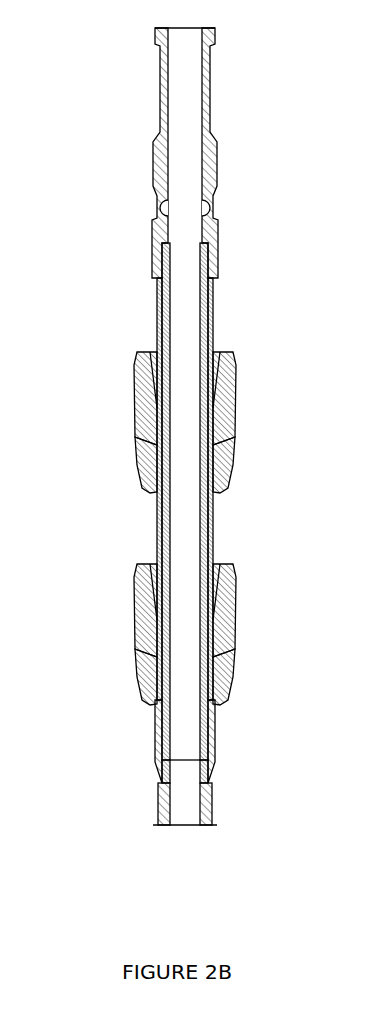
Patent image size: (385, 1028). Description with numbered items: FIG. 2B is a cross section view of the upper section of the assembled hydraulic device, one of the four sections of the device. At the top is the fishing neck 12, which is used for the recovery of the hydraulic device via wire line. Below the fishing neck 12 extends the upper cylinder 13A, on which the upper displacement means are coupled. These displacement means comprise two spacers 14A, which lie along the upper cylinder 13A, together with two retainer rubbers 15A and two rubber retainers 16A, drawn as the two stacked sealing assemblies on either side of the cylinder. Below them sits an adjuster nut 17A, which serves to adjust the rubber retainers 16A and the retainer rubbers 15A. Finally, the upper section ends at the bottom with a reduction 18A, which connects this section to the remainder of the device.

The fishing neck 12 is at (212, 39).
The upper cylinder 13A is at (203, 300).
The spacer 14A is at (157, 290).
The retainer rubber 15A is at (150, 365).
The rubber retainer 16A is at (155, 485).
The adjuster nut 17A is at (212, 715).
The reduction 18A is at (163, 778).